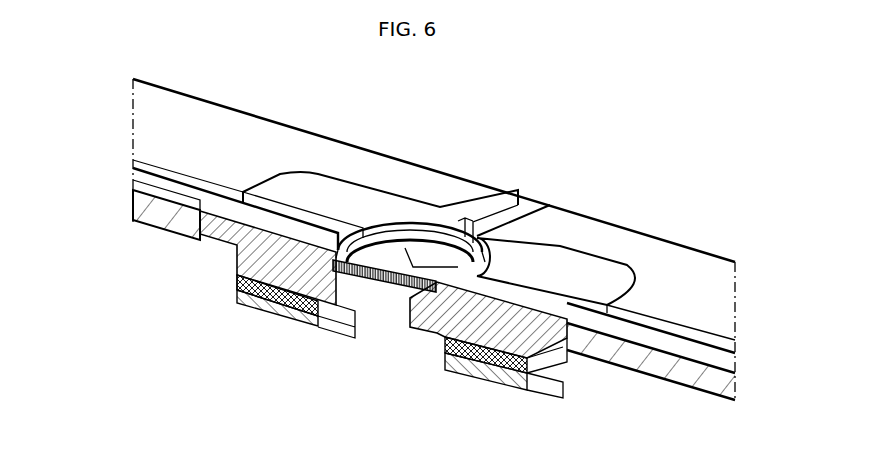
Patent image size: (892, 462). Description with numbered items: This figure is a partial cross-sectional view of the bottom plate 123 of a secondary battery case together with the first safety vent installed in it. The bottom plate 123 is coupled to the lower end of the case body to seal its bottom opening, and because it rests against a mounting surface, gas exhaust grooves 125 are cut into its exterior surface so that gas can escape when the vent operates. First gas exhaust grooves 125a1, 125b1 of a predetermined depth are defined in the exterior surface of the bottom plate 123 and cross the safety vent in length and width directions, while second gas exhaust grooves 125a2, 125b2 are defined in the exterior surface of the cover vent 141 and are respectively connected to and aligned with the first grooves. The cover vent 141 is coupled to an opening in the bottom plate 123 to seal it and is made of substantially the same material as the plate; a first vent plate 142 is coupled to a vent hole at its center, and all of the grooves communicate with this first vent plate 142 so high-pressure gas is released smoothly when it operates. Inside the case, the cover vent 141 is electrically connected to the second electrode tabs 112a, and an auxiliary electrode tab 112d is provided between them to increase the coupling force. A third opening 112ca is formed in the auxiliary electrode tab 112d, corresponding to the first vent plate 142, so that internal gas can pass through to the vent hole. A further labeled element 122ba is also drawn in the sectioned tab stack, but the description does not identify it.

The bottom plate 123 is at (195, 226).
The plate 125 is at (596, 208).
The first gas exhaust groove 125a1 is at (660, 332).
The second gas exhaust groove 125a2 is at (585, 310).
The first gas exhaust groove 125b1 is at (523, 212).
The second gas exhaust groove 125b2 is at (497, 178).
The cover vent 141 is at (306, 188).
The first vent plate 142 is at (433, 250).
The second electrode tab 112a is at (266, 313).
The auxiliary electrode tab 112d is at (237, 278).
The third opening 112ca is at (403, 311).
The lower body section 122ba is at (431, 347).